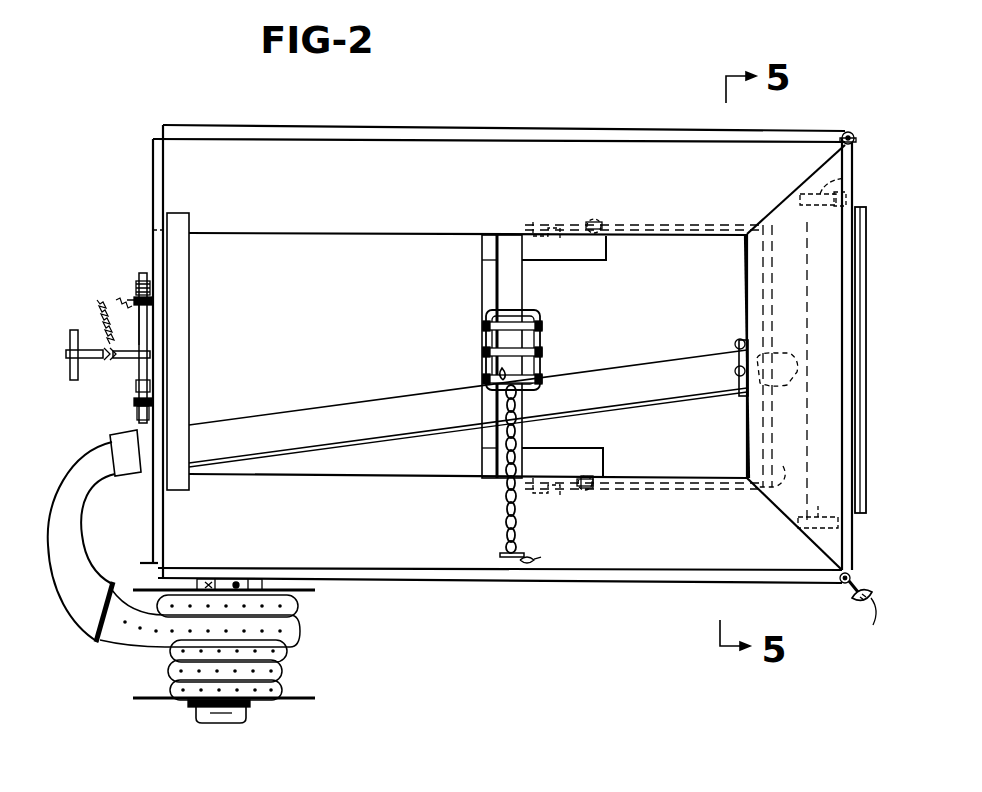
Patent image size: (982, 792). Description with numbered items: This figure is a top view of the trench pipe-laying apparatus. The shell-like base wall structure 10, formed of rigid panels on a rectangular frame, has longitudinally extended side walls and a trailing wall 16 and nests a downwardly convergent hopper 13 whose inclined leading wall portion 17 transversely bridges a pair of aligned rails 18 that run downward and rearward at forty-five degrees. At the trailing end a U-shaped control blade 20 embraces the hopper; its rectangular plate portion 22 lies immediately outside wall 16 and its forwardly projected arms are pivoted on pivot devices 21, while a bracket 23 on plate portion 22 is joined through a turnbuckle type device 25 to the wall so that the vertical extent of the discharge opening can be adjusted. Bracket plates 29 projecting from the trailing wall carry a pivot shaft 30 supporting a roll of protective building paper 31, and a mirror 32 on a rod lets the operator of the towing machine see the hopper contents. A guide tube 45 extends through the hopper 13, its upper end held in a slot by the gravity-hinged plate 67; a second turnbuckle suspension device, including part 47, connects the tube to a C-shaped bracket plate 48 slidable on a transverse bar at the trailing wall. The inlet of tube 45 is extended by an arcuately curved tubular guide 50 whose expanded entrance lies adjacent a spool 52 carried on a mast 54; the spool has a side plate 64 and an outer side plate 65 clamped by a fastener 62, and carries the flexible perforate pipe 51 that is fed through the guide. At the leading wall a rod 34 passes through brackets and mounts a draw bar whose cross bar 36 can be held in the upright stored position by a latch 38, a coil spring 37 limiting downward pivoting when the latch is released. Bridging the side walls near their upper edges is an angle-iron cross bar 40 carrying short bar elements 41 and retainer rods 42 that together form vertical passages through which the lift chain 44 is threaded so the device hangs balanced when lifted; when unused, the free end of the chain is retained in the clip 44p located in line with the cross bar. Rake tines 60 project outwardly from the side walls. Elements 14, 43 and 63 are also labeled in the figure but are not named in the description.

The shell-like wall structure 10 is at (355, 234).
The hopper 13 is at (443, 177).
The top frame member 14 is at (477, 126).
The trailing wall 16 is at (745, 288).
The inclined leading wall portion 17 is at (298, 357).
The rails 18 is at (603, 457).
The control blade 20 is at (692, 494).
The pivot devices 21 is at (590, 493).
The rectangular plate portion 22 is at (779, 468).
The bracket 23 is at (782, 380).
The turnbuckle type device 25 is at (780, 355).
The bracket plates 29 is at (834, 186).
The pivot shaft 30 is at (842, 198).
The roll of protective building paper 31 is at (866, 419).
The mirror 32 is at (870, 604).
The rod 34 is at (142, 273).
The cross bar 36 is at (68, 383).
The coil spring 37 is at (101, 309).
The latch 38 is at (136, 386).
The cross bar 40 is at (518, 302).
The bar elements 41 is at (543, 327).
The retainer rod 42 is at (485, 320).
The bolt 43 is at (540, 371).
The lift chain 44 is at (504, 509).
The clip 44p is at (497, 556).
The guide tube 45 is at (322, 435).
The second turnbuckle suspension device 47 is at (735, 372).
The C-shaped bracket plate 48 is at (741, 350).
The tubular guide 50 is at (78, 467).
The flexible pipe 51 is at (140, 634).
The spool 52 is at (317, 609).
The mast 54 is at (258, 585).
The tines 60 is at (546, 224).
The fastener 62 is at (246, 719).
The clamp bolt 63 is at (235, 581).
The side plate 64 is at (316, 590).
The outer side plate 65 is at (172, 700).
The hinged plate 67 is at (187, 322).